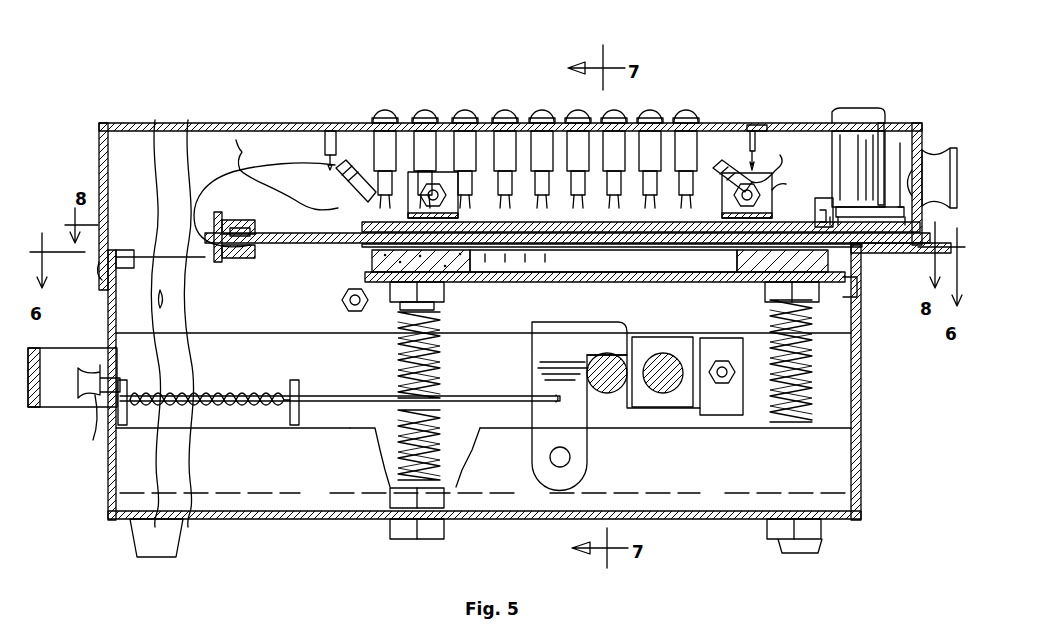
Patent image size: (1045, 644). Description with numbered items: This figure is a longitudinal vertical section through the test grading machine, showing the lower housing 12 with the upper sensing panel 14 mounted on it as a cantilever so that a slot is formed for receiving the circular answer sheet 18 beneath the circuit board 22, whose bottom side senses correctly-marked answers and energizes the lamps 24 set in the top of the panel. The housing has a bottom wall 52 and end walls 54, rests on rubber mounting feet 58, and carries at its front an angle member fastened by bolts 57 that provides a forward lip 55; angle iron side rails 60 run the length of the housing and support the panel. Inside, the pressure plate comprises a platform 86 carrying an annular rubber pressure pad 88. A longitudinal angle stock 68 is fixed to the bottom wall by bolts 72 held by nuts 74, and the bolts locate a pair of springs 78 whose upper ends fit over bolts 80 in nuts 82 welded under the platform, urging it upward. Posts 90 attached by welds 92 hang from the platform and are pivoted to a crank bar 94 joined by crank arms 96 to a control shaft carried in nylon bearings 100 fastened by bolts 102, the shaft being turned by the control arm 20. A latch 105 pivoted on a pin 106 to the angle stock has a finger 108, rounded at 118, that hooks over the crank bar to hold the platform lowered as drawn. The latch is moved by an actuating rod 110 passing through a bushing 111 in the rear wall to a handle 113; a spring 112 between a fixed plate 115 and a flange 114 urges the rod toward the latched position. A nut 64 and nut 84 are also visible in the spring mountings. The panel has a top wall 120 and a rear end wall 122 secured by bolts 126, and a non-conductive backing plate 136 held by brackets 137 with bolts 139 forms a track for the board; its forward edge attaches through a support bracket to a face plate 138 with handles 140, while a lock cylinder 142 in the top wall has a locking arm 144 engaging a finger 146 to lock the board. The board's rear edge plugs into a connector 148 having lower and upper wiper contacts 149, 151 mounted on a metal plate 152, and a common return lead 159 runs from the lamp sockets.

The lower housing 12 is at (290, 556).
The upper sensing panel 14 is at (290, 108).
The answer sheet 18 is at (512, 233).
The control arm 20 is at (50, 407).
The circuit board 22 is at (622, 232).
The lamps 24 is at (542, 110).
The bottom wall 52 is at (350, 520).
The end walls 54 is at (108, 322).
The lip 55 is at (905, 255).
The bolts 57 is at (862, 285).
The rubber mounting feet 58 is at (155, 548).
The side rails 60 is at (293, 265).
The nut 64 is at (343, 298).
The angle stock 68 is at (690, 495).
The bolts 72 is at (440, 420).
The nuts 74 is at (447, 498).
The springs 78 is at (440, 375).
The bolts 80 is at (398, 338).
The nuts 82 is at (435, 300).
The nut 84 is at (840, 285).
The platform 86 is at (548, 272).
The pressure pad 88 is at (468, 272).
The posts 90 is at (615, 360).
The welds 92 is at (628, 282).
The crank bar 94 is at (610, 393).
The crank arms 96 is at (722, 360).
The bearings 100 is at (665, 393).
The bolts 102 is at (785, 272).
The latch 105 is at (540, 415).
The pin 106 is at (570, 460).
The finger 108 is at (590, 320).
The actuating rod 110 is at (352, 396).
The bushing 111 is at (97, 438).
The spring 112 is at (247, 386).
The handle 113 is at (85, 395).
The flange 114 is at (299, 380).
The fixed plate 115 is at (124, 380).
The rounded surface 118 is at (652, 355).
The top wall 120 is at (298, 128).
The rear end wall 122 is at (99, 132).
The bolts 126 is at (105, 275).
The backing plate 136 is at (563, 232).
The brackets 137 is at (458, 200).
The face plate 138 is at (912, 178).
The bolts 139 is at (758, 192).
The handles 140 is at (930, 150).
The lock cylinder 142 is at (850, 110).
The locking arm 144 is at (860, 212).
The finger 146 is at (898, 140).
The printed circuit board connector 148 is at (218, 262).
The lower wiper contacts 149 is at (240, 258).
The upper wiper contacts 151 is at (250, 226).
The metal plate 152 is at (222, 222).
The common return lead 159 is at (700, 230).